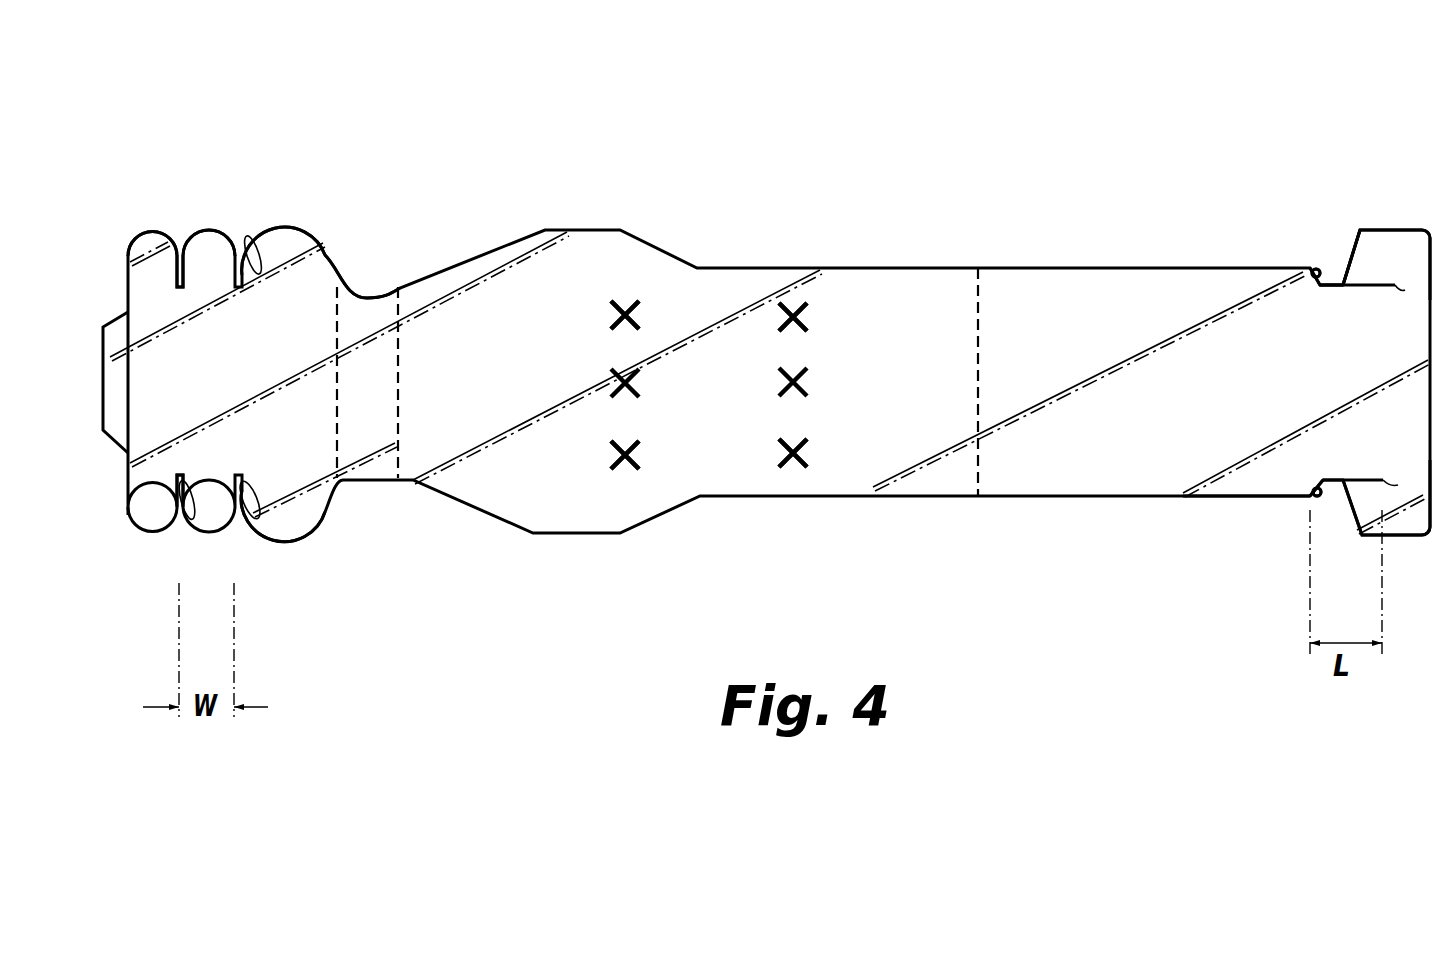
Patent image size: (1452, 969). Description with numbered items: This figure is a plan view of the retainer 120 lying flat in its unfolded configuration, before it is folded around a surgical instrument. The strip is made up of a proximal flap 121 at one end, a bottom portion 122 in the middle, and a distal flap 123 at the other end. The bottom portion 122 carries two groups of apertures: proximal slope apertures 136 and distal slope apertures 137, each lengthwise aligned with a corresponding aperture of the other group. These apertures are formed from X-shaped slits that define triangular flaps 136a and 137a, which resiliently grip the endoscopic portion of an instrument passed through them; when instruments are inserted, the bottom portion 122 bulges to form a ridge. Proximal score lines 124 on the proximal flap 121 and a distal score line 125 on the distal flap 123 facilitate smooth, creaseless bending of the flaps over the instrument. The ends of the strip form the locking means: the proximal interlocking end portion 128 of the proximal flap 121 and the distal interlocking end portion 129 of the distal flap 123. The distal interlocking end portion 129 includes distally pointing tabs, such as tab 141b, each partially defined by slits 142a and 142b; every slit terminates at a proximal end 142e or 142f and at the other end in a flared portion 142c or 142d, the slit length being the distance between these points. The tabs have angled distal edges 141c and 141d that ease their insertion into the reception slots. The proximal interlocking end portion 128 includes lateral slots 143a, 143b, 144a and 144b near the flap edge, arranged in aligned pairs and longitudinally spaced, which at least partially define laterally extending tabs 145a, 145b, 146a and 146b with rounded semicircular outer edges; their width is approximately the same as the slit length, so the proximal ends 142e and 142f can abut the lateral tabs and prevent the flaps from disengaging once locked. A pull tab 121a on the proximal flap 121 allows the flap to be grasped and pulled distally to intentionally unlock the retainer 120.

The retainer 120 is at (897, 122).
The proximal flap 121 is at (228, 378).
The pull tab 121a is at (107, 313).
The bottom portion 122 is at (582, 172).
The distal flap 123 is at (1198, 386).
The proximal score lines 124 is at (385, 298).
The distal score line 125 is at (977, 300).
The proximal interlocking end portion 128 is at (273, 167).
The distal interlocking end portion 129 is at (1237, 583).
The proximal slope apertures 136 is at (652, 310).
The triangular flaps 136a is at (623, 302).
The distal slope apertures 137 is at (825, 312).
The triangular flaps 137a is at (795, 310).
The tab 141b is at (1368, 243).
The distal edge 141c is at (1338, 513).
The distal edge 141d is at (1347, 263).
The slit 142a is at (1347, 478).
The slit 142b is at (1363, 292).
The flared portion 142c is at (1307, 498).
The flared portion 142d is at (1268, 283).
The proximal end 142e is at (1393, 487).
The proximal end 142f is at (1410, 277).
The lateral slot 143a is at (188, 533).
The lateral slot 143b is at (183, 252).
The lateral slot 144a is at (258, 520).
The lateral slot 144b is at (255, 240).
The lateral tab 145a is at (148, 533).
The lateral tab 145b is at (150, 230).
The lateral tab 146a is at (218, 535).
The lateral tab 146b is at (215, 232).